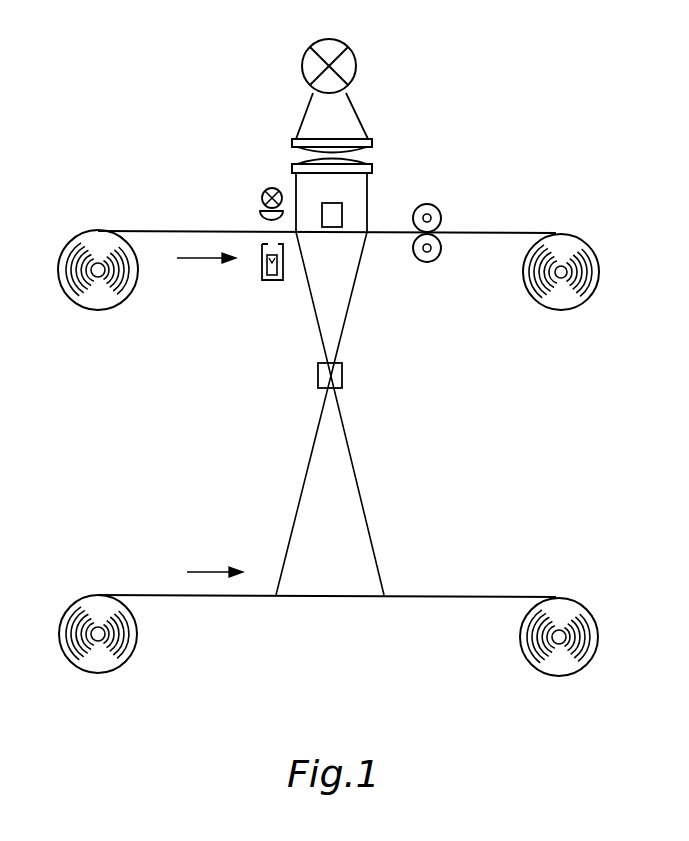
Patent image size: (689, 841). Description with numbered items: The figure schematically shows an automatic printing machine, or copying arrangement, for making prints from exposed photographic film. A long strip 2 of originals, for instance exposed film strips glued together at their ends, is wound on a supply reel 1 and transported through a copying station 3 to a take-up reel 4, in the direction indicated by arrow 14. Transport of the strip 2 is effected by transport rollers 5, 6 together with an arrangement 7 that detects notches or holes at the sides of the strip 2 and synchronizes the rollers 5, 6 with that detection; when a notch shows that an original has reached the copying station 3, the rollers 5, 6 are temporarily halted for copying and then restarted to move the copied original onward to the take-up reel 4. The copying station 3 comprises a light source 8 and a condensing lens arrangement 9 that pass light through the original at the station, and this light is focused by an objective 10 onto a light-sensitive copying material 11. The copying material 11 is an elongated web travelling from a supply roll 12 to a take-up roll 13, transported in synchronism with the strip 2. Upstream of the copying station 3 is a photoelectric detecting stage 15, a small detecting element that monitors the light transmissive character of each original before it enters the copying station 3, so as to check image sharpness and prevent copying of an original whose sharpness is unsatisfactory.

The supply reel 1 is at (80, 236).
The long strip of originals 2 is at (168, 231).
The copying station 3 is at (355, 250).
The take-up reel 4 is at (585, 249).
The transport roller 5 is at (441, 213).
The transport roller 6 is at (440, 255).
The arrangement for detecting notches or holes 7 is at (322, 208).
The light source 8 is at (355, 70).
The condensing lens arrangement 9 is at (373, 163).
The objective 10 is at (343, 375).
The light-sensitive copying material 11 is at (315, 596).
The supply roll 12 is at (86, 667).
The take-up roll 13 is at (571, 606).
The arrow 14 is at (200, 262).
The photoelectric detecting stage 15 is at (282, 310).